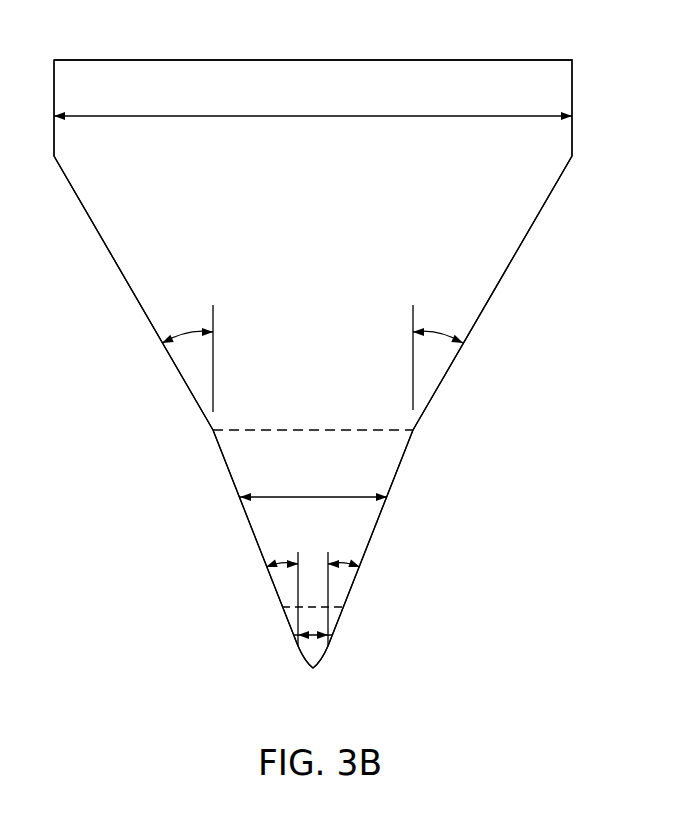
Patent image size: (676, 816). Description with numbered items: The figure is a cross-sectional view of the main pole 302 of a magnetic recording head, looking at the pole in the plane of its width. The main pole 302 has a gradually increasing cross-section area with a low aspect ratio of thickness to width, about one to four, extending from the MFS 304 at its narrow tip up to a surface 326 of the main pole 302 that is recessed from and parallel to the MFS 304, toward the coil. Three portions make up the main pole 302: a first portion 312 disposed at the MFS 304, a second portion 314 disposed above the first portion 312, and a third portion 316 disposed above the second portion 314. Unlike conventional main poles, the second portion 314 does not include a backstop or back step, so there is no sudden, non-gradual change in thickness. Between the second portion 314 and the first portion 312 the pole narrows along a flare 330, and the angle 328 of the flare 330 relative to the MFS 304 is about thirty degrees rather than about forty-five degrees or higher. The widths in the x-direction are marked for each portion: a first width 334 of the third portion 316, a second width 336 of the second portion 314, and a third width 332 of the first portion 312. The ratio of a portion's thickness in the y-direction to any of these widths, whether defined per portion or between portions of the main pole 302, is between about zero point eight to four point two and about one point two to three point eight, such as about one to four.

The main pole 302 is at (578, 206).
The MFS 304 is at (312, 669).
The first portion 312 is at (315, 642).
The second portion 314 is at (363, 530).
The third portion 316 is at (433, 360).
The surface 326 is at (168, 60).
The angle 328 is at (185, 332).
The flare 330 is at (193, 431).
The third width 332 is at (318, 634).
The first width 334 is at (306, 117).
The second width 336 is at (318, 497).